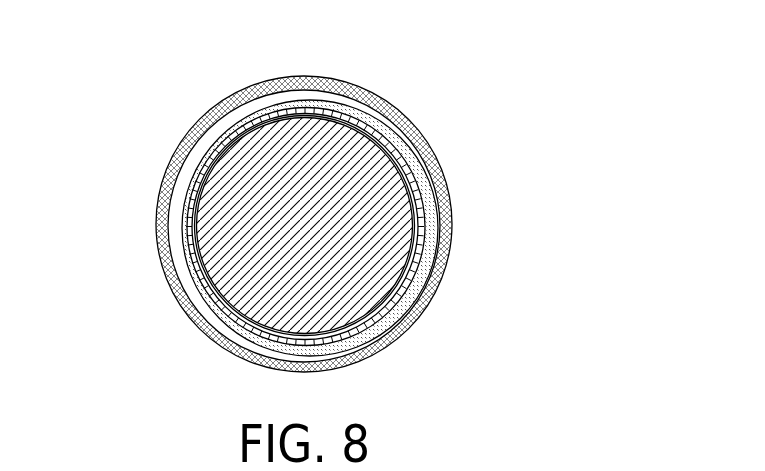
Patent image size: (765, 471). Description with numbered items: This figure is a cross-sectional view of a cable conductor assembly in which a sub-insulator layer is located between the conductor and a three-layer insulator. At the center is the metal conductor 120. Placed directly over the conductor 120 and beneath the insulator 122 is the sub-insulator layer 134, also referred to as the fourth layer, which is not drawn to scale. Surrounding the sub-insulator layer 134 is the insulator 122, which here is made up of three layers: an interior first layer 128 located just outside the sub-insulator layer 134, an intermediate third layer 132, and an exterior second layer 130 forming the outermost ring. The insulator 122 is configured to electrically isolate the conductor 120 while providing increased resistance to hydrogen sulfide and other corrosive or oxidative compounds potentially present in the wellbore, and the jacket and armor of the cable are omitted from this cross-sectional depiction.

The conductor 120 is at (393, 232).
The insulator 122 is at (110, 185).
The first layer 128 is at (350, 117).
The second layer 130 is at (438, 287).
The third layer 132 is at (420, 170).
The sub-insulator layer 134 is at (247, 118).